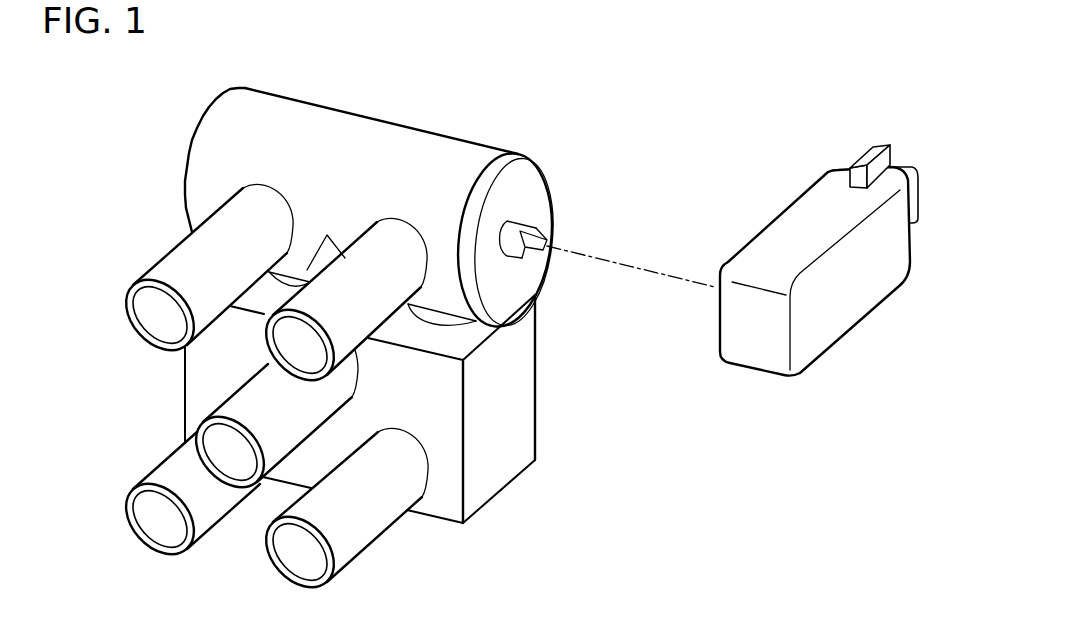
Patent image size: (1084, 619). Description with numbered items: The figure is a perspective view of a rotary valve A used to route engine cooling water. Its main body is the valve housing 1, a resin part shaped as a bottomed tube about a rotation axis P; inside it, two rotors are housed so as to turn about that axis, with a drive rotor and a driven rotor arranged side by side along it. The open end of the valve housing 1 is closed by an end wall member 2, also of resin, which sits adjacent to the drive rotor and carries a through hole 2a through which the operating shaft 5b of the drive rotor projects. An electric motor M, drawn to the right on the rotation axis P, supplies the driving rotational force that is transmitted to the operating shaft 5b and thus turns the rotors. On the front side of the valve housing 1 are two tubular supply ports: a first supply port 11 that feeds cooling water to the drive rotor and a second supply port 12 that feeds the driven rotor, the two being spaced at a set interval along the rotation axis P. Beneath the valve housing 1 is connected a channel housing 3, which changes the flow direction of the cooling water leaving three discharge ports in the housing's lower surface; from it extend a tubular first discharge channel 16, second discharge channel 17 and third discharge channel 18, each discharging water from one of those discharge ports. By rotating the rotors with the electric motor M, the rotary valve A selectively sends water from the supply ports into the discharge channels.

The valve housing 1 is at (417, 116).
The end wall member 2 is at (530, 197).
The operating shaft 5b is at (518, 222).
The through hole 2a is at (505, 257).
The channel housing 3 is at (547, 380).
The second supply port 12 is at (166, 254).
The first supply port 11 is at (347, 256).
The third discharge channel 18 is at (247, 404).
The second discharge channel 17 is at (162, 466).
The first discharge channel 16 is at (372, 542).
The rotation axis P is at (636, 258).
The rotary valve A is at (688, 124).
The electric motor M is at (860, 302).